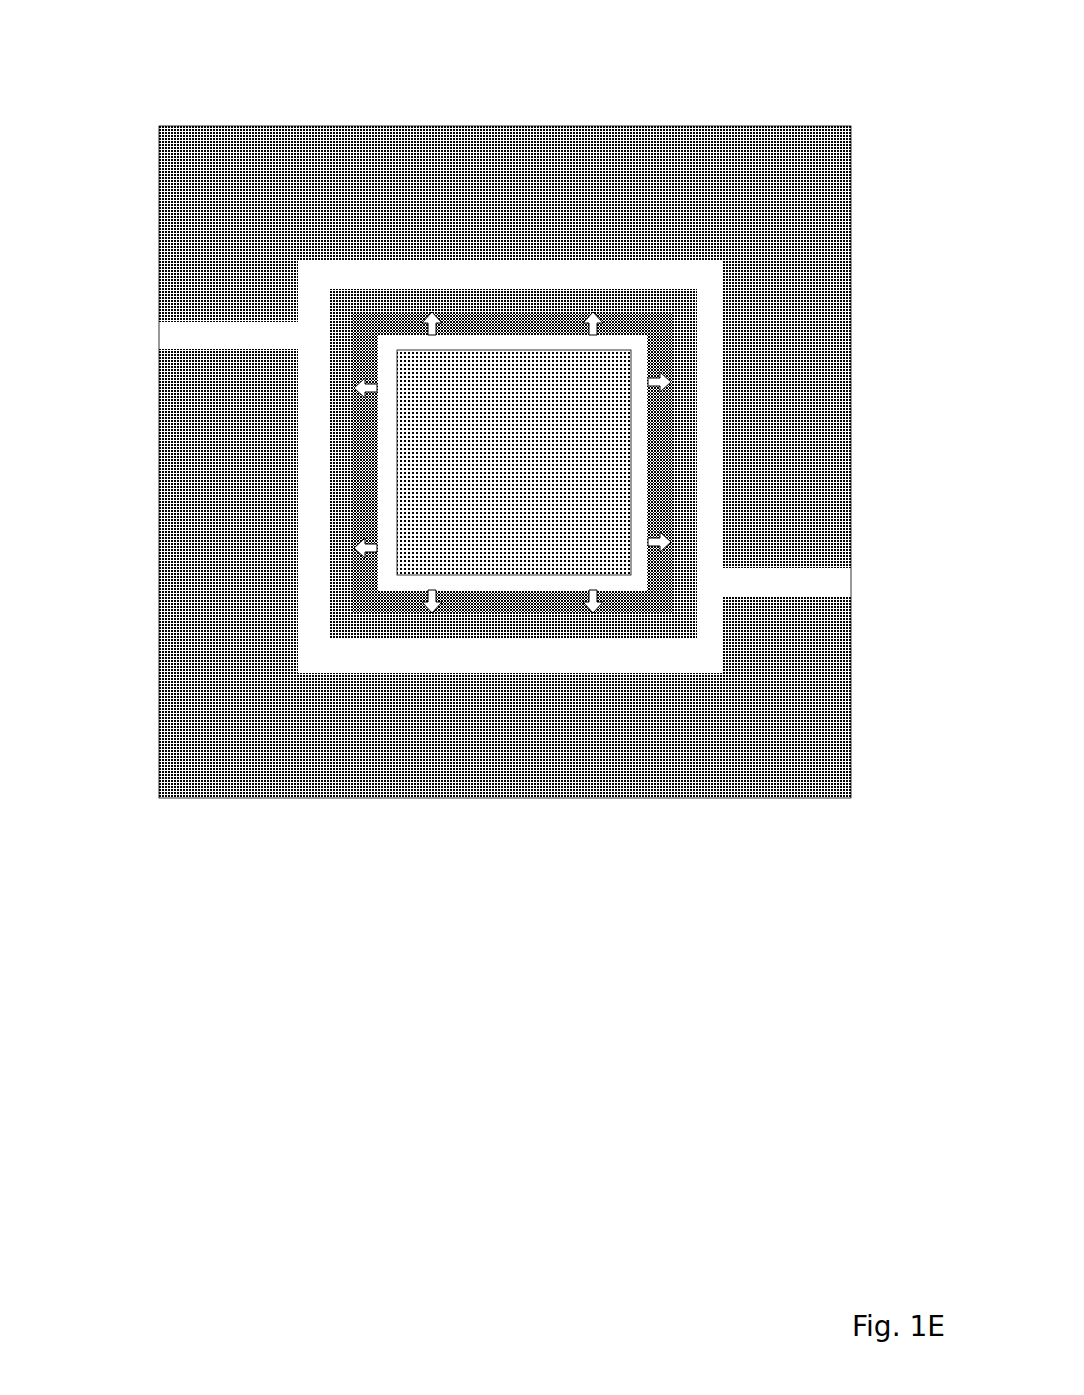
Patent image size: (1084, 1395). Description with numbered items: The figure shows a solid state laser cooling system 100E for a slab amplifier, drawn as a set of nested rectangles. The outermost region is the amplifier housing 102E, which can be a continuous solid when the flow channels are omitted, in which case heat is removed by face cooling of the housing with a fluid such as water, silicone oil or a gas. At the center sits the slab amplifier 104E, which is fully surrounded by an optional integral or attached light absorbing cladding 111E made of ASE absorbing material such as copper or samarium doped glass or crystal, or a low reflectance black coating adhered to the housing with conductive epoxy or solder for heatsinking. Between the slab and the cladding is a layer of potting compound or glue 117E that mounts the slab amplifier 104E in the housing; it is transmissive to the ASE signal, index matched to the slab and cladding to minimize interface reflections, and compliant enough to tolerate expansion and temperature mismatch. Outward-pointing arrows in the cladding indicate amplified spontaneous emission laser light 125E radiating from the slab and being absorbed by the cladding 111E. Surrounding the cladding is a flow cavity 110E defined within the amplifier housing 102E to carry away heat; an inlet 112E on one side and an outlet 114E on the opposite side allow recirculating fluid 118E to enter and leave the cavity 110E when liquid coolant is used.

The solid state laser cooling system 100E is at (782, 96).
The amplifier housing 102E is at (333, 322).
The slab amplifier 104E is at (631, 434).
The flow cavity 110E is at (344, 259).
The light absorbing cladding 111E is at (667, 326).
The inlet 112E is at (226, 335).
The outlet 114E is at (785, 586).
The potting compound or glue 117E is at (473, 599).
The recirculating fluid 118E is at (309, 634).
The amplified spontaneous emission (ASE) laser light 125E is at (615, 626).